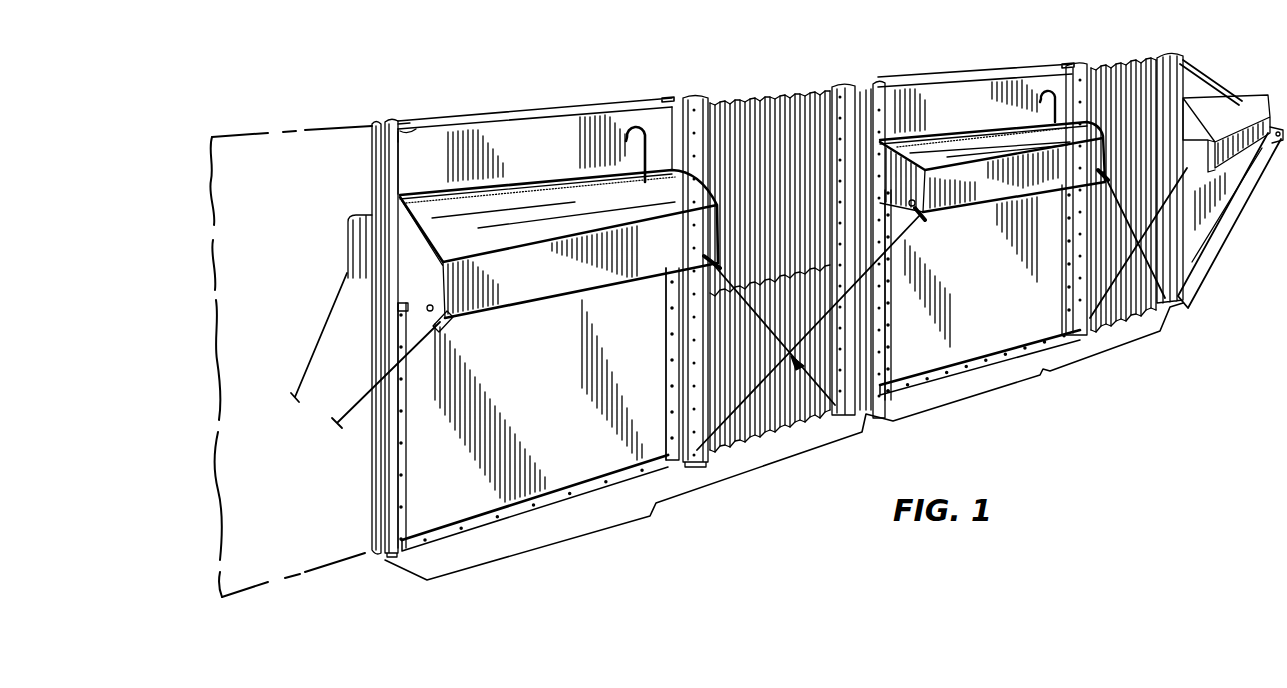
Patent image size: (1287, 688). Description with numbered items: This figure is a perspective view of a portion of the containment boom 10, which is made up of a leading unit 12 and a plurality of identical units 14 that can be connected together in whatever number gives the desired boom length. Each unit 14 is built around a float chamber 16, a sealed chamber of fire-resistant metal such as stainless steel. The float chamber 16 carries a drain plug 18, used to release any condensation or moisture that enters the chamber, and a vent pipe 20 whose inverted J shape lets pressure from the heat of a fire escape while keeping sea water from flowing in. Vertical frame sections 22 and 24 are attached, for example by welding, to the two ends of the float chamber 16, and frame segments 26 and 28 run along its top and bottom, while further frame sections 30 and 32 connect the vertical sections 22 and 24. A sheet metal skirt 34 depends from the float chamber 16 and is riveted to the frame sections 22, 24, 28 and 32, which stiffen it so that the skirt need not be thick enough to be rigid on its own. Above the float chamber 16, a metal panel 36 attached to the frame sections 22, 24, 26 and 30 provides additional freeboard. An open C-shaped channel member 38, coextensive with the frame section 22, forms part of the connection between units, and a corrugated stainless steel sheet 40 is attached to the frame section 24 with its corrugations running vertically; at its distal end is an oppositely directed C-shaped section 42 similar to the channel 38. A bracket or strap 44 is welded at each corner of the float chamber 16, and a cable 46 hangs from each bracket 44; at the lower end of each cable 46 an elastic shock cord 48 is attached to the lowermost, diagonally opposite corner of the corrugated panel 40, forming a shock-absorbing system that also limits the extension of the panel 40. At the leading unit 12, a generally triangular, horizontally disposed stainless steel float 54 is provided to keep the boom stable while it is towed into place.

The containment boom 10 is at (1025, 62).
The leading unit 12 is at (1228, 222).
The unit 14 is at (784, 441).
The float chamber 16 is at (525, 297).
The drain plug 18 is at (428, 307).
The vent pipe 20 is at (647, 140).
The vertical frame section 22 is at (403, 135).
The vertical frame section 24 is at (690, 95).
The frame segment 26 is at (550, 177).
The frame segment 28 is at (406, 312).
The frame section 30 is at (545, 106).
The frame section 32 is at (540, 500).
The skirt 34 is at (540, 387).
The metal panel 36 is at (548, 155).
The C-shaped channel member 38 is at (378, 123).
The corrugated sheet 40 is at (787, 112).
The C-shaped section 42 is at (847, 82).
The bracket 44 is at (455, 330).
The cable 46 is at (357, 400).
The elastic cord 48 is at (800, 407).
The float 54 is at (1240, 162).